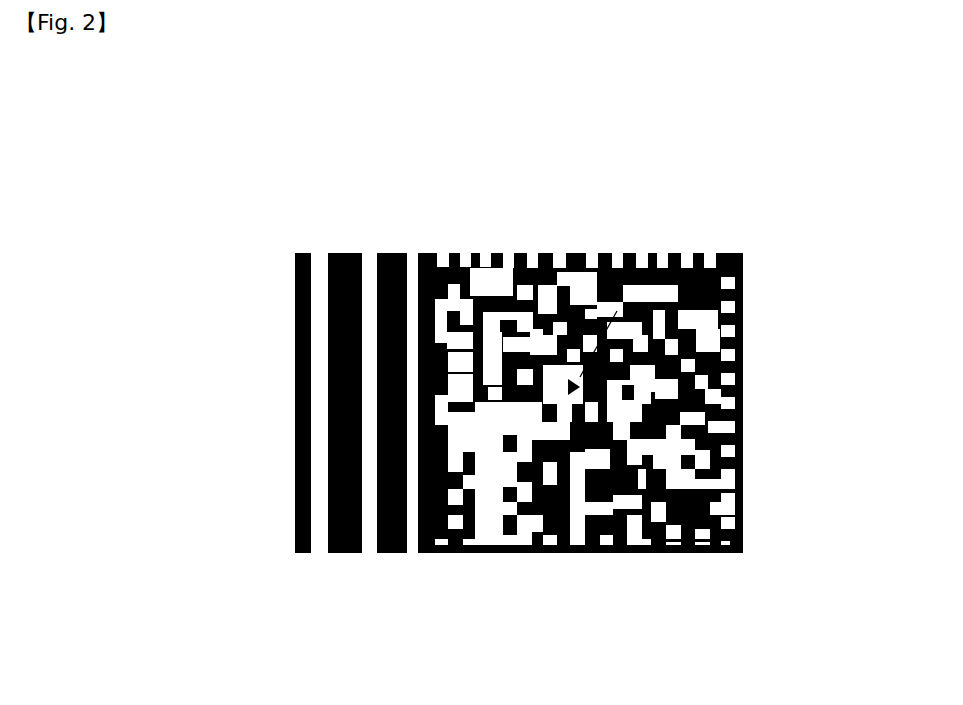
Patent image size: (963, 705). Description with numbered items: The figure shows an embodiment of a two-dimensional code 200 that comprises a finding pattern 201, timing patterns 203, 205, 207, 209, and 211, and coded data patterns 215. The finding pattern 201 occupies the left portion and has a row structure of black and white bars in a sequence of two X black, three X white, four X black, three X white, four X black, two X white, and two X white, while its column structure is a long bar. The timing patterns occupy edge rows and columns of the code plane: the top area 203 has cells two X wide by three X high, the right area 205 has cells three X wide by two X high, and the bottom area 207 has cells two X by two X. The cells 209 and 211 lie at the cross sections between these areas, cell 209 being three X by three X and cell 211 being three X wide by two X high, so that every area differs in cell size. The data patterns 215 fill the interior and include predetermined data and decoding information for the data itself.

The two-dimensional code 200 is at (602, 426).
The finding pattern 201 is at (432, 251).
The top area timing pattern 203 is at (728, 252).
The right area timing pattern 205 is at (762, 258).
The bottom area timing pattern 207 is at (745, 555).
The cross section cell 209 is at (739, 252).
The cross section cell 211 is at (746, 565).
The data pattern 215 is at (723, 307).